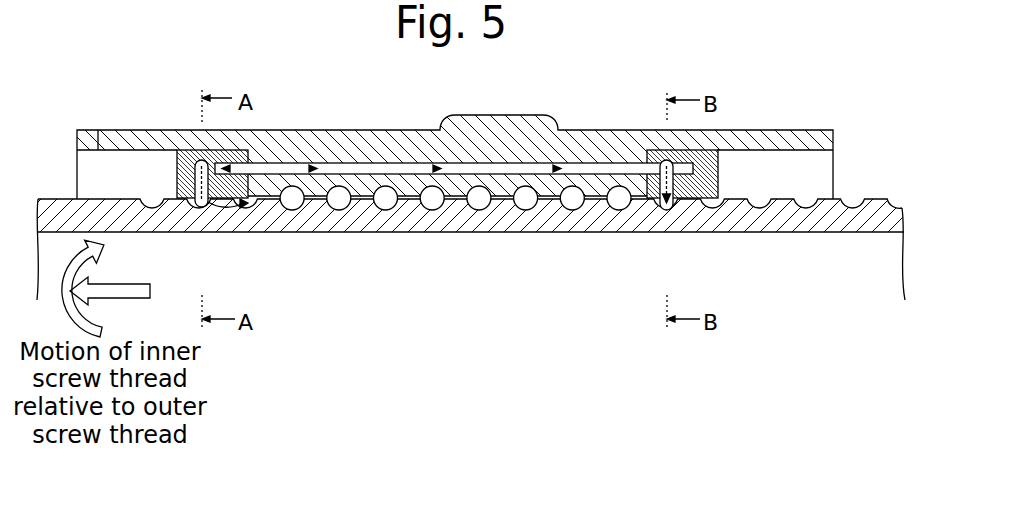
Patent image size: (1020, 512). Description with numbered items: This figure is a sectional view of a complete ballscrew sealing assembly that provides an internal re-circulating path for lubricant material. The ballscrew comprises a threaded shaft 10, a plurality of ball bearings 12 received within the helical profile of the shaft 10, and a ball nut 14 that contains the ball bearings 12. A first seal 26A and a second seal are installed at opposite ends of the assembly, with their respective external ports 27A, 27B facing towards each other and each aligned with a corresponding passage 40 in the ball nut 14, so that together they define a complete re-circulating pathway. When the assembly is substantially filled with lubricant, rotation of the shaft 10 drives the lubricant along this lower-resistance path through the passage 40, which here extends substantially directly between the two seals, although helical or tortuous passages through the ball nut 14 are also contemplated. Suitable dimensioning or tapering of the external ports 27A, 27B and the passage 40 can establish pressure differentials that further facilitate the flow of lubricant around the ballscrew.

The threaded shaft 10 is at (50, 215).
The ball nut 14 is at (131, 130).
The passage 40 is at (365, 163).
The external port 27A is at (252, 156).
The external port 27B is at (650, 155).
The first seal 26A is at (230, 205).
The ball bearings 12 is at (528, 211).